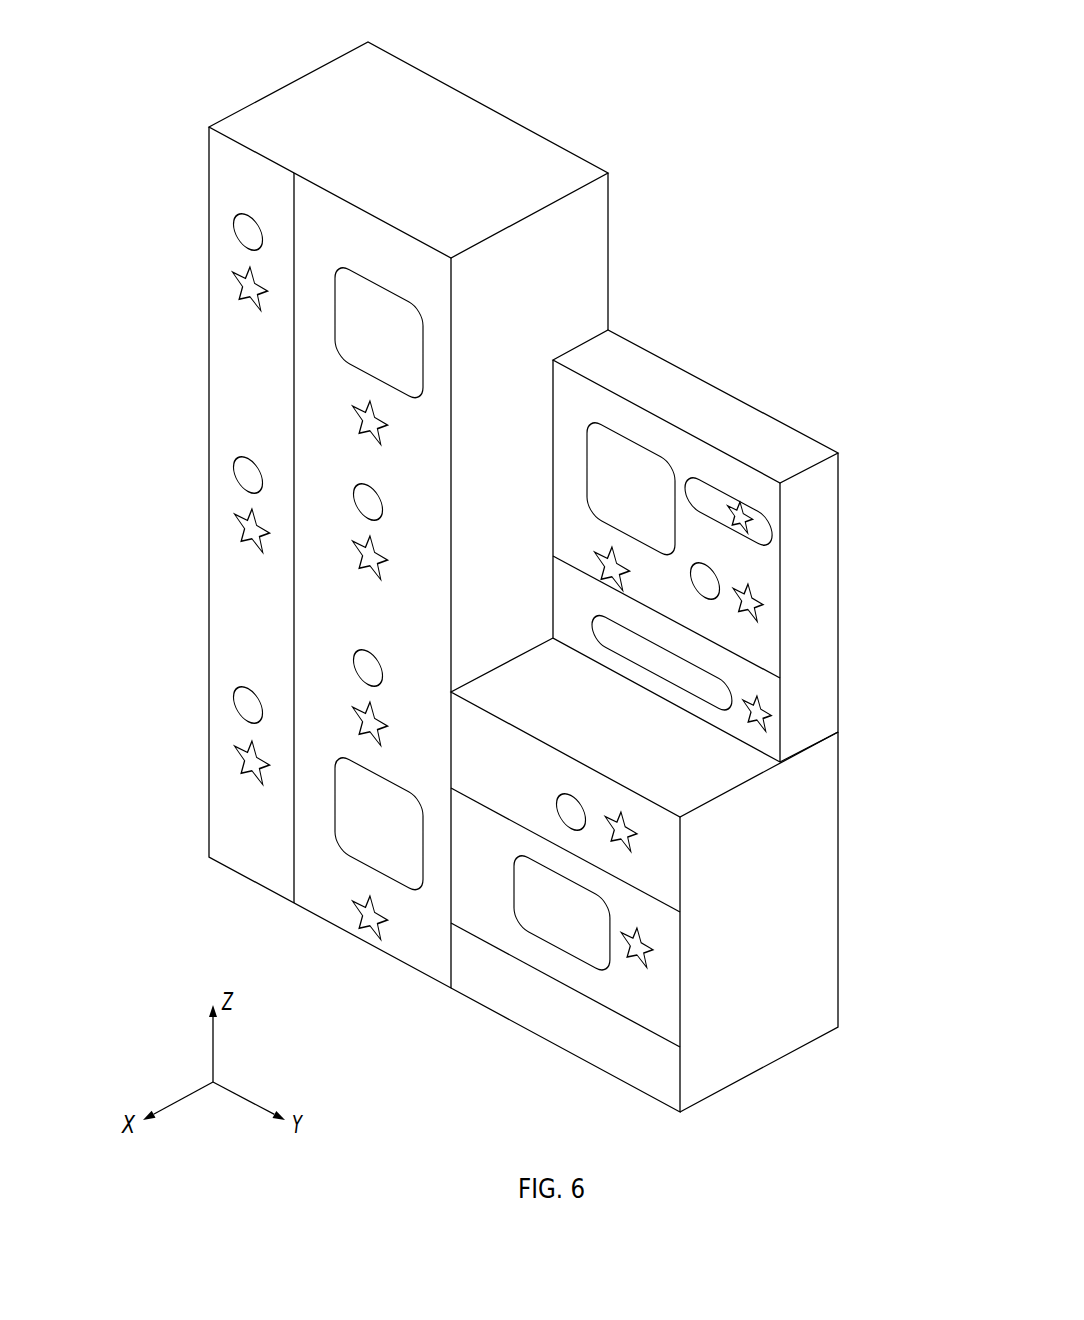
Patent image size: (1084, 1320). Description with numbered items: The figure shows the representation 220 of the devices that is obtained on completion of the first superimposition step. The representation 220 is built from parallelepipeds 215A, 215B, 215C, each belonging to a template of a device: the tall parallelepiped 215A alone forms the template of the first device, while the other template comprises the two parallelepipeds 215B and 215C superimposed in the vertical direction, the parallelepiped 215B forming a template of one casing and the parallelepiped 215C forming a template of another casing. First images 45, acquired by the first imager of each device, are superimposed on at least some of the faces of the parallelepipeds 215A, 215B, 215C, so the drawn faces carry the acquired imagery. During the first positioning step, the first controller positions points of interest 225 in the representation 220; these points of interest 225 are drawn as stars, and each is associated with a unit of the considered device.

The first image 45 is at (238, 342).
The representation 220 is at (166, 585).
The point of interest 225 is at (225, 528).
The parallelepiped 215A is at (210, 655).
The parallelepiped 215B is at (838, 967).
The parallelepiped 215C is at (793, 452).